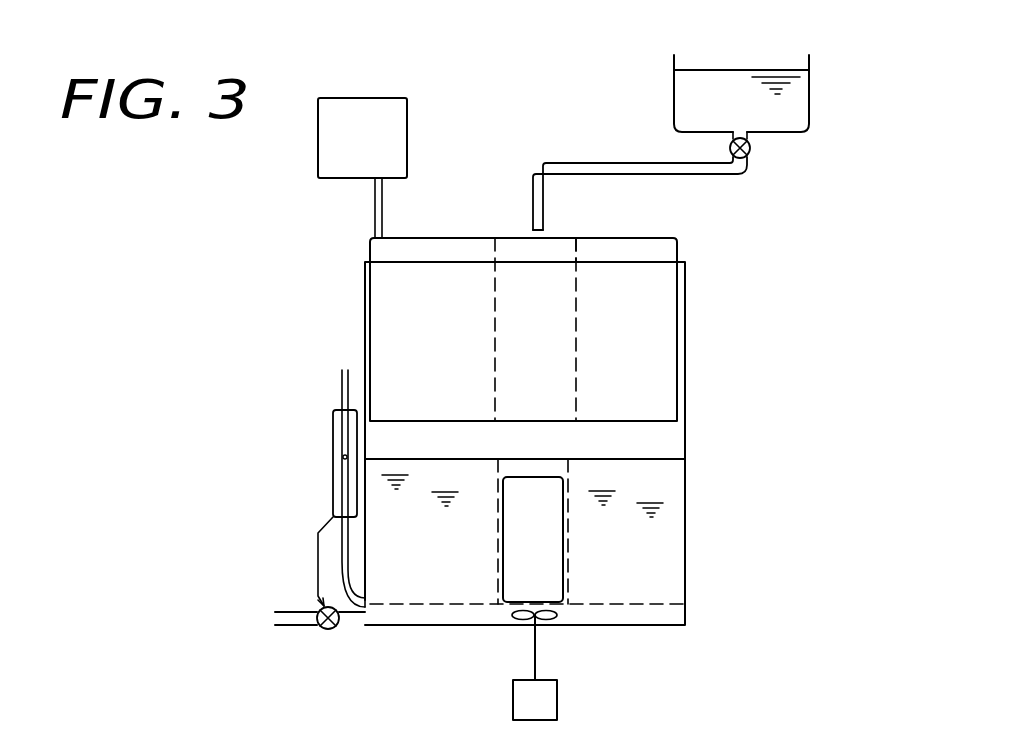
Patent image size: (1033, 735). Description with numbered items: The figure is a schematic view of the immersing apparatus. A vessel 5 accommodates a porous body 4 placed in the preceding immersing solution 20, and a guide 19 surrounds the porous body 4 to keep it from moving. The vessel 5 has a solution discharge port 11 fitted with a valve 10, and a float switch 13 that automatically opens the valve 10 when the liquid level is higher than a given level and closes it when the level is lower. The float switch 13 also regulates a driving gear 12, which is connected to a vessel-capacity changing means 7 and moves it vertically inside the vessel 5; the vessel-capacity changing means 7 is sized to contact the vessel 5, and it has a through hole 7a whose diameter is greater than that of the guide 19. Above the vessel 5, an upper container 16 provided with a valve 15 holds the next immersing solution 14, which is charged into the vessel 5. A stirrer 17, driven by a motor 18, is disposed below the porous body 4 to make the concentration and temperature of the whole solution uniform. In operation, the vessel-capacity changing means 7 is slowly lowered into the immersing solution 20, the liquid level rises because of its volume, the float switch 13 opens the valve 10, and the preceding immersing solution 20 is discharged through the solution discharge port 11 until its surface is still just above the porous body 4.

The porous body 4 is at (555, 596).
The vessel 5 is at (685, 377).
The vessel-capacity changing means 7 is at (668, 253).
The through hole 7a is at (576, 277).
The valve 10 is at (327, 630).
The solution discharge port 11 is at (300, 620).
The driving gear 12 is at (392, 145).
The float switch 13 is at (333, 453).
The Nth immersing solution 14 is at (695, 105).
The valve 15 is at (750, 153).
The upper container 16 is at (810, 65).
The stirrer 17 is at (525, 640).
The motor 18 is at (545, 703).
The guide 19 is at (568, 535).
The (N-1)th immersing solution 20 is at (663, 482).